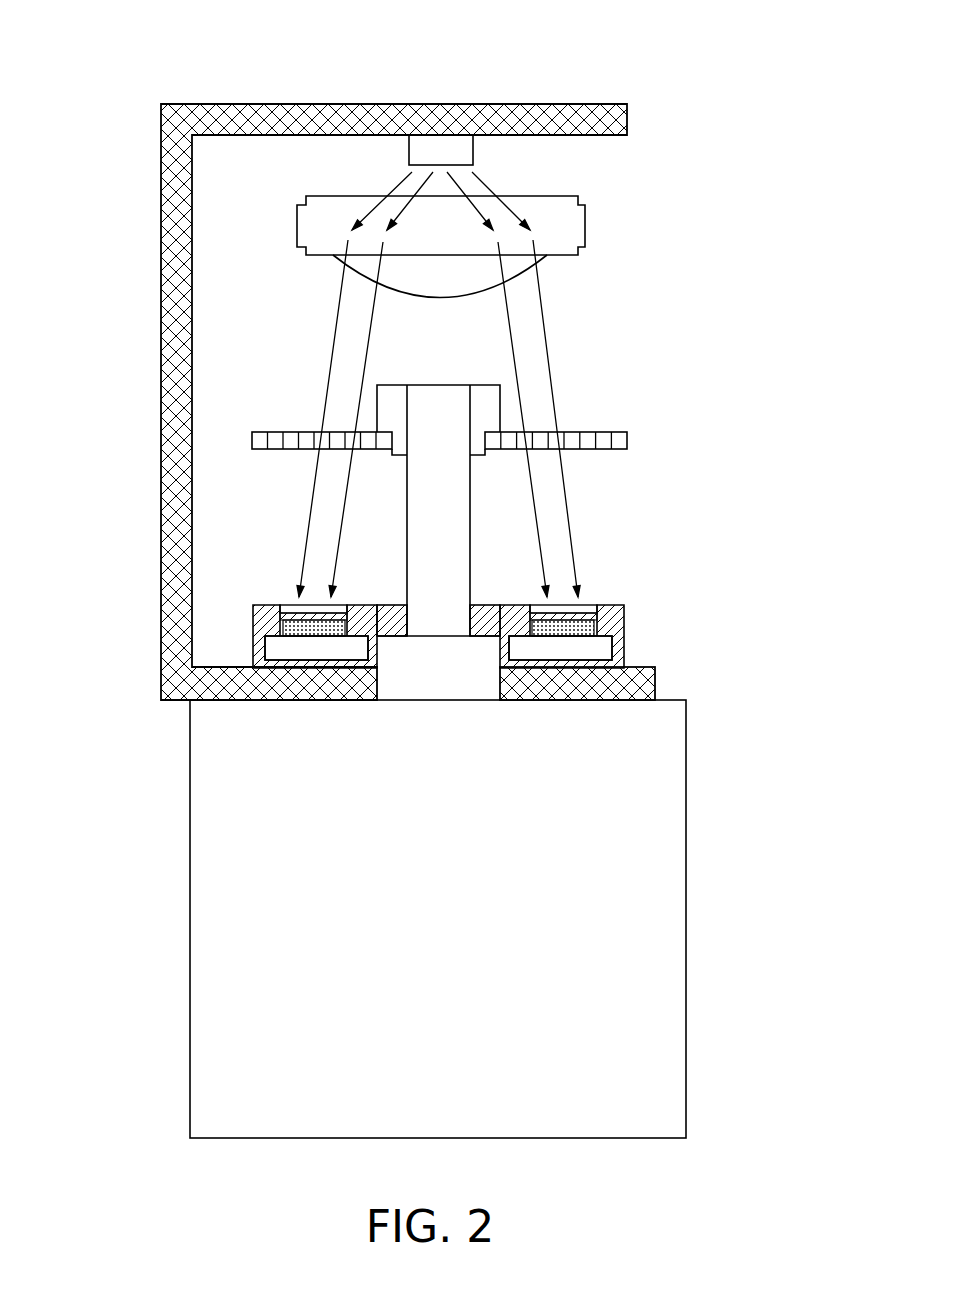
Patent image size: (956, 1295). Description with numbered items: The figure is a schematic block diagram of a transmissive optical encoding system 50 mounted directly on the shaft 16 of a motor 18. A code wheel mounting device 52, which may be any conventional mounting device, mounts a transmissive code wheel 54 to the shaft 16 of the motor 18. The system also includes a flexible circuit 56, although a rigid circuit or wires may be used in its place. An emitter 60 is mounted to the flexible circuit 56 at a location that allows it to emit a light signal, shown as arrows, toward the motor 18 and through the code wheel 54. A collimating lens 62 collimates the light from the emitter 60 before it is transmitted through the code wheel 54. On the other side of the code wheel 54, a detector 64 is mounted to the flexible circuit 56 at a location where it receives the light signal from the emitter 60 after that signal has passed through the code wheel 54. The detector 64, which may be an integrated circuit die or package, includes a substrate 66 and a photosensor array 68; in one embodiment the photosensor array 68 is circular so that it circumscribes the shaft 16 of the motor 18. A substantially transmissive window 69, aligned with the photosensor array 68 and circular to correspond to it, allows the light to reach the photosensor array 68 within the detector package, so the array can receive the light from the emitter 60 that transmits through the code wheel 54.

The transmissive optical encoding system 50 is at (396, 571).
The flexible circuit 56 is at (170, 439).
The emitter 60 is at (463, 143).
The collimating lens 62 is at (578, 226).
The code wheel mounting device 52 is at (487, 403).
The code wheel 54 is at (588, 442).
The shaft 16 is at (460, 525).
The motor 18 is at (201, 800).
The detector 64 is at (622, 633).
The substrate 66 is at (600, 648).
The photosensor array 68 is at (283, 622).
The transmissive window 69 is at (283, 607).